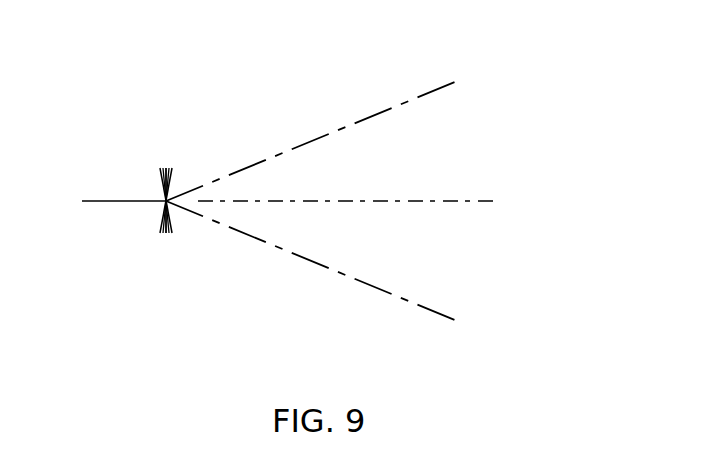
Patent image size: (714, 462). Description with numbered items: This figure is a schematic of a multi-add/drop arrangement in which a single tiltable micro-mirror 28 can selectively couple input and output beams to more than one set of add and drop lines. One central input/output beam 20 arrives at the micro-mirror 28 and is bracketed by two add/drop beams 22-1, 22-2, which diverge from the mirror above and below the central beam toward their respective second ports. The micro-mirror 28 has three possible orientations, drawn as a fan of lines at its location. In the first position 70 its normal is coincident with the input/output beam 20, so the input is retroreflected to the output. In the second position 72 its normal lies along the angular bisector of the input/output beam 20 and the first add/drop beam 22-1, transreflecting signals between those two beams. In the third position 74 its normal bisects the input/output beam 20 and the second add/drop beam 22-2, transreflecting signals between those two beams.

The input/output beam 20 is at (417, 201).
The first add/drop beam 22-1 is at (374, 117).
The second add/drop beam 22-2 is at (375, 286).
The micro-mirror 28 is at (163, 272).
The first position 70 is at (165, 228).
The second position 72 is at (170, 220).
The third position 74 is at (160, 221).